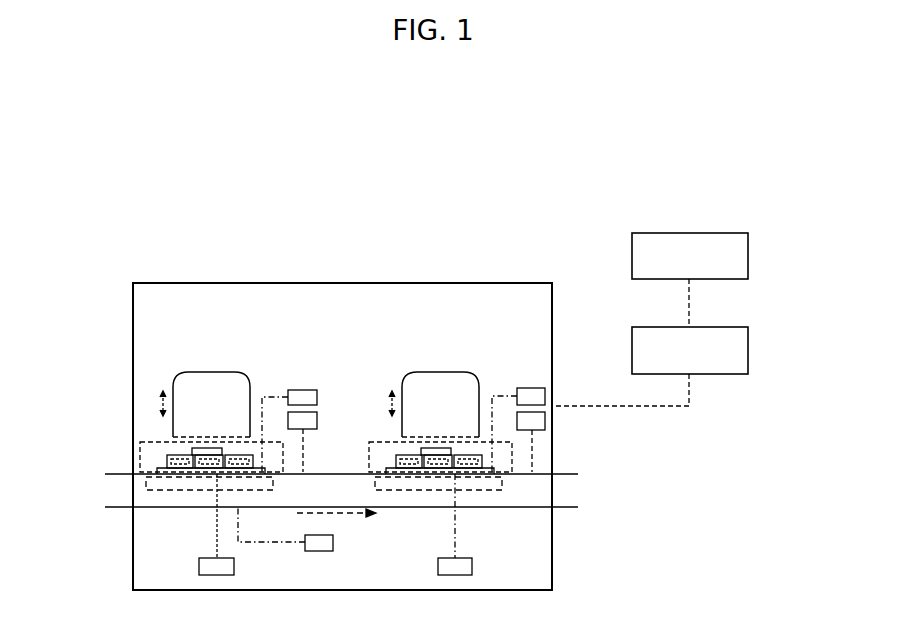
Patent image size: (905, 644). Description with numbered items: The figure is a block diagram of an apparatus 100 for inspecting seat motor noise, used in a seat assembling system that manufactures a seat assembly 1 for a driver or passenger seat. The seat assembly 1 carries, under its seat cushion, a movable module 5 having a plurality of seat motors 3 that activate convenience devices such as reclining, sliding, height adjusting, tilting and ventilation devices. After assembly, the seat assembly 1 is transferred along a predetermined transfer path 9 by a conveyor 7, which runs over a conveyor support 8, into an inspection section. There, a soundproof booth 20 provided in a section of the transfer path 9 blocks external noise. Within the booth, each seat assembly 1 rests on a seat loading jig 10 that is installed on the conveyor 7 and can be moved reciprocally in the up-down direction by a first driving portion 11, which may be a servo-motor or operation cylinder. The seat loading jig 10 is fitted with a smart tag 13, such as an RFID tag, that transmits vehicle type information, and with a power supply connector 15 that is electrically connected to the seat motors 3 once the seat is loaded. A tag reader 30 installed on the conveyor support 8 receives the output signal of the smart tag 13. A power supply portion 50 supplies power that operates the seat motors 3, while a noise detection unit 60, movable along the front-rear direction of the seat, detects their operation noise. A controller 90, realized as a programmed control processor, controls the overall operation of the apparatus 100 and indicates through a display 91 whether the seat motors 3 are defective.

The apparatus for inspecting seat motor noise 100 is at (330, 176).
The soundproof booth 20 is at (300, 283).
The noise detection unit 60 is at (192, 445).
The power supply portion 50 is at (215, 455).
The seat assembly 1 is at (239, 368).
The seat motors 3 is at (170, 455).
The movable module 5 is at (167, 464).
The seat loading jig 10 is at (157, 470).
The conveyor 7 is at (180, 490).
The conveyor support 8 is at (155, 508).
The first driving portion 11 is at (225, 575).
The tag reader 30 is at (313, 551).
The transfer path 9 is at (366, 516).
The smart tag 13 is at (300, 390).
The power supply connector 15 is at (317, 421).
The display 91 is at (748, 256).
The controller 90 is at (748, 349).